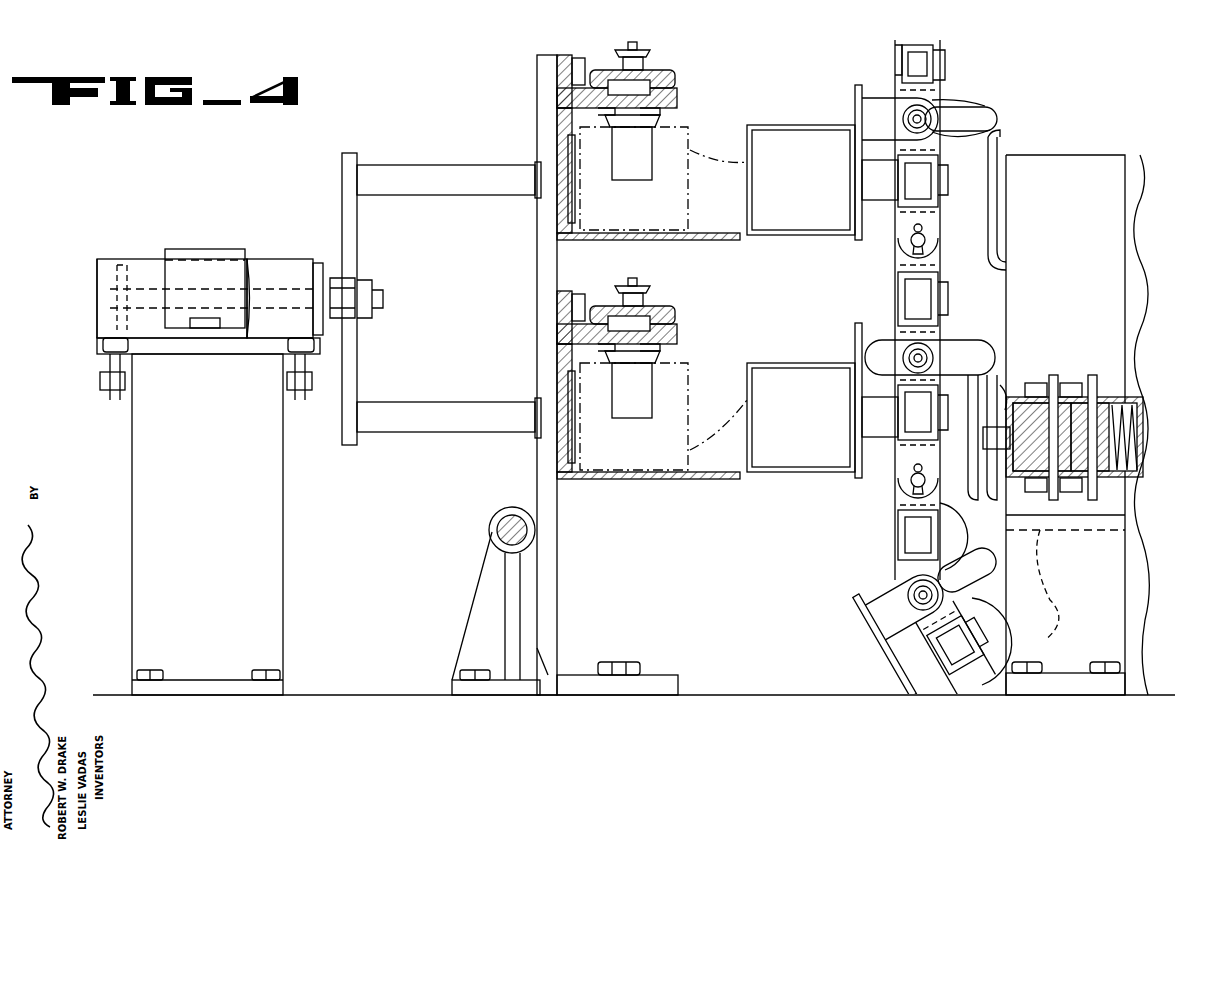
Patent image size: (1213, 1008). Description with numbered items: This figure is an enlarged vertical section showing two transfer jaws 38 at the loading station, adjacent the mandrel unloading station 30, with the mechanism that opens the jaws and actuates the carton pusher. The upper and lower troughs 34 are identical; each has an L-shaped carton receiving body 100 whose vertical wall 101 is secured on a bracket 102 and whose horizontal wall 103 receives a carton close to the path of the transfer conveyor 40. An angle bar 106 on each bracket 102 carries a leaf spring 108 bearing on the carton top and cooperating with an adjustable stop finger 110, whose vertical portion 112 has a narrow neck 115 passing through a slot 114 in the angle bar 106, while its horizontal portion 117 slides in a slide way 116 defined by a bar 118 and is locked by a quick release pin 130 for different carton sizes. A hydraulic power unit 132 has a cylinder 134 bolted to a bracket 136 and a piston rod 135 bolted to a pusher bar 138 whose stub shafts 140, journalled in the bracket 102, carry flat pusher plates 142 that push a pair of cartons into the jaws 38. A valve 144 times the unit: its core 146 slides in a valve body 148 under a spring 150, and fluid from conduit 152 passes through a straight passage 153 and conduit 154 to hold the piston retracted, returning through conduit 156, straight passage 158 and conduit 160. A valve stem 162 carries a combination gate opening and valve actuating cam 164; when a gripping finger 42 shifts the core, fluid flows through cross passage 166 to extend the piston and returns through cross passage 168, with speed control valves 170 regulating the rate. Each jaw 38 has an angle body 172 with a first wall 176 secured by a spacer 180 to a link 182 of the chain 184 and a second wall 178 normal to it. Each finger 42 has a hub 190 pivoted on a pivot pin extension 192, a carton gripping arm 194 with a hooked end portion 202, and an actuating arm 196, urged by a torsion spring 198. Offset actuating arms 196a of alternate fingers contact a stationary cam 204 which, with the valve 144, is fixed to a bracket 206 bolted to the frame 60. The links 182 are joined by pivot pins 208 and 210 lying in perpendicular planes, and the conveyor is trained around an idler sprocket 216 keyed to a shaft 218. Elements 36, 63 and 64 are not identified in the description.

The mandrel unloading station 30 is at (520, 140).
The trough 34 is at (557, 240).
The drive shaft 36 is at (297, 256).
The transfer jaw 38 is at (818, 238).
The transfer conveyor 40 is at (955, 85).
The carton gripping finger 42 is at (873, 100).
The frame 60 is at (375, 693).
The shaft 63 is at (495, 527).
The brace 64 is at (478, 585).
The carton receiving body 100 is at (568, 198).
The vertical wall 101 is at (557, 152).
The bracket 102 is at (557, 552).
The horizontal wall 103 is at (650, 240).
The angle bar 106 is at (557, 75).
The leaf spring 108 is at (705, 350).
The adjustable stop finger 110 is at (655, 180).
The vertical portion 112 is at (610, 170).
The slot 114 is at (656, 127).
The narrow neck 115 is at (628, 257).
The slide way 116 is at (660, 112).
The horizontal portion 117 is at (668, 78).
The bar 118 is at (660, 86).
The quick release pin 130 is at (638, 44).
The hydraulic power unit 132 is at (148, 259).
The cylinder 134 is at (100, 278).
The piston rod 135 is at (262, 259).
The bracket 136 is at (140, 425).
The pusher bar 138 is at (355, 247).
The stub shaft 140 is at (390, 166).
The pusher plate 142 is at (572, 212).
The valve 144 is at (1158, 293).
The core 146 is at (1140, 400).
The valve body 148 is at (1150, 455).
The spring 150 is at (1102, 413).
The conduit 152 is at (1050, 398).
The straight passage 153 is at (1048, 500).
The conduit 154 is at (330, 355).
The conduit 156 is at (110, 360).
The straight passage 158 is at (1165, 525).
The conduit 160 is at (1093, 375).
The valve stem 162 is at (983, 440).
The combination gate opening and valve actuating cam 164 is at (972, 470).
The cross passage 166 is at (1100, 566).
The cross passage 168 is at (1053, 375).
The speed control valve 170 is at (290, 378).
The angle body 172 is at (830, 238).
The first wall 176 is at (860, 205).
The second wall 178 is at (747, 212).
The spacer 180 is at (872, 180).
The link 182 is at (898, 165).
The chain 184 is at (950, 45).
The hub 190 is at (978, 100).
The pivot pin extension 192 is at (930, 254).
The carton gripping arm 194 is at (848, 100).
The actuating arm 196 is at (985, 350).
The actuating arm 196a is at (1000, 125).
The torsion spring 198 is at (990, 118).
The hooked end portion 202 is at (855, 120).
The stationary cam 204 is at (990, 222).
The bracket 206 is at (1035, 257).
The pivot pin 208 is at (898, 410).
The pivot pin 210 is at (905, 110).
The idler sprocket 216 is at (1135, 395).
The shaft 218 is at (1050, 602).